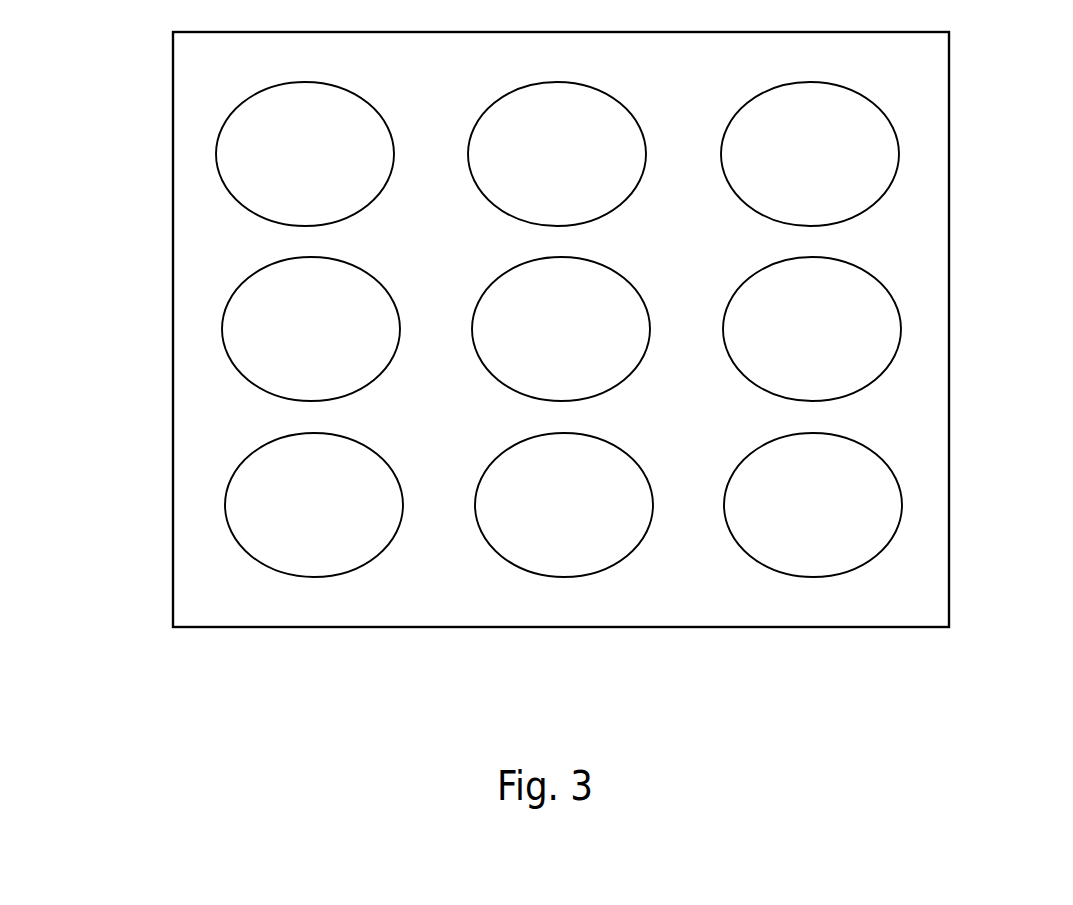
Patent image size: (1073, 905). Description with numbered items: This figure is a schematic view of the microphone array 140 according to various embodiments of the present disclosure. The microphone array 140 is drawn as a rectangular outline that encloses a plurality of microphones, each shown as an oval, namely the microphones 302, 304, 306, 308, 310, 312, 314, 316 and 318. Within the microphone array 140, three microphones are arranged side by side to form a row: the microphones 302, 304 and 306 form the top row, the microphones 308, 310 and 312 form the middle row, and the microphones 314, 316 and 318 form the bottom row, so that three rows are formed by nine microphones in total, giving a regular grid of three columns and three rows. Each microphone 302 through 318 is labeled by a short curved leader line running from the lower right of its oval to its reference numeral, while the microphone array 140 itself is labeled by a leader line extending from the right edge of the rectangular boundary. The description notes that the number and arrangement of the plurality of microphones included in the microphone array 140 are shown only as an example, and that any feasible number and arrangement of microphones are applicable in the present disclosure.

The microphone array 140 is at (949, 328).
The microphone 302 is at (349, 216).
The microphone 304 is at (601, 216).
The microphone 306 is at (854, 216).
The microphone 308 is at (355, 391).
The microphone 310 is at (605, 391).
The microphone 312 is at (856, 391).
The microphone 314 is at (358, 567).
The microphone 316 is at (608, 567).
The microphone 318 is at (857, 567).